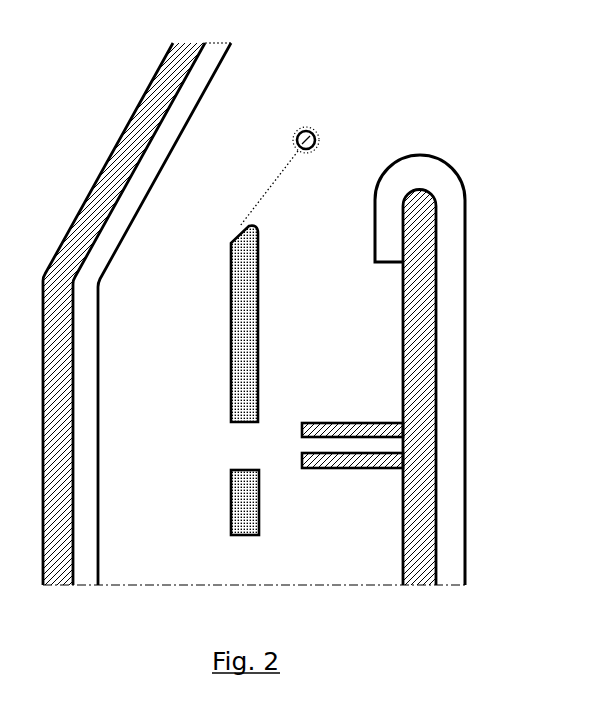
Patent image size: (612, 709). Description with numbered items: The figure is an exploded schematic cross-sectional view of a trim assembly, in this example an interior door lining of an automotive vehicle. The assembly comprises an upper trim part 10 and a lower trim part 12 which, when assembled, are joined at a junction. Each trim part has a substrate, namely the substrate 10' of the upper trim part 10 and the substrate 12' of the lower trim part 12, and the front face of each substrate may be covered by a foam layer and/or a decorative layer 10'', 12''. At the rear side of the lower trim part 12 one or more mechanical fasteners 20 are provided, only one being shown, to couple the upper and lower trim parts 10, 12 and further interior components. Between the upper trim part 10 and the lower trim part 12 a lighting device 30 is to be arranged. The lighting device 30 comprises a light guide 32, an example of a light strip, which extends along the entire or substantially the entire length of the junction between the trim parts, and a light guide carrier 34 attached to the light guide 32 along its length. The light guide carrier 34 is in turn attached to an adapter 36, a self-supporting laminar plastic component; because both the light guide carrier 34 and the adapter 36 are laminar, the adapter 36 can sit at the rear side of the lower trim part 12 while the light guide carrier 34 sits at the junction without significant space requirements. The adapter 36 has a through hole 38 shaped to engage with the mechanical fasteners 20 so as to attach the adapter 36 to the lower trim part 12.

The upper trim part 10 is at (189, 314).
The substrate 10' is at (124, 314).
The decorative layer 10'' is at (175, 314).
The lower trim part 12 is at (432, 370).
The substrate 12' is at (373, 388).
The decorative layer 12'' is at (463, 370).
The mechanical fasteners 20 is at (360, 470).
The lighting device 30 is at (193, 380).
The light guide 32 is at (315, 134).
The light guide carrier 34 is at (265, 185).
The adapter 36 is at (233, 378).
The through hole 38 is at (245, 451).